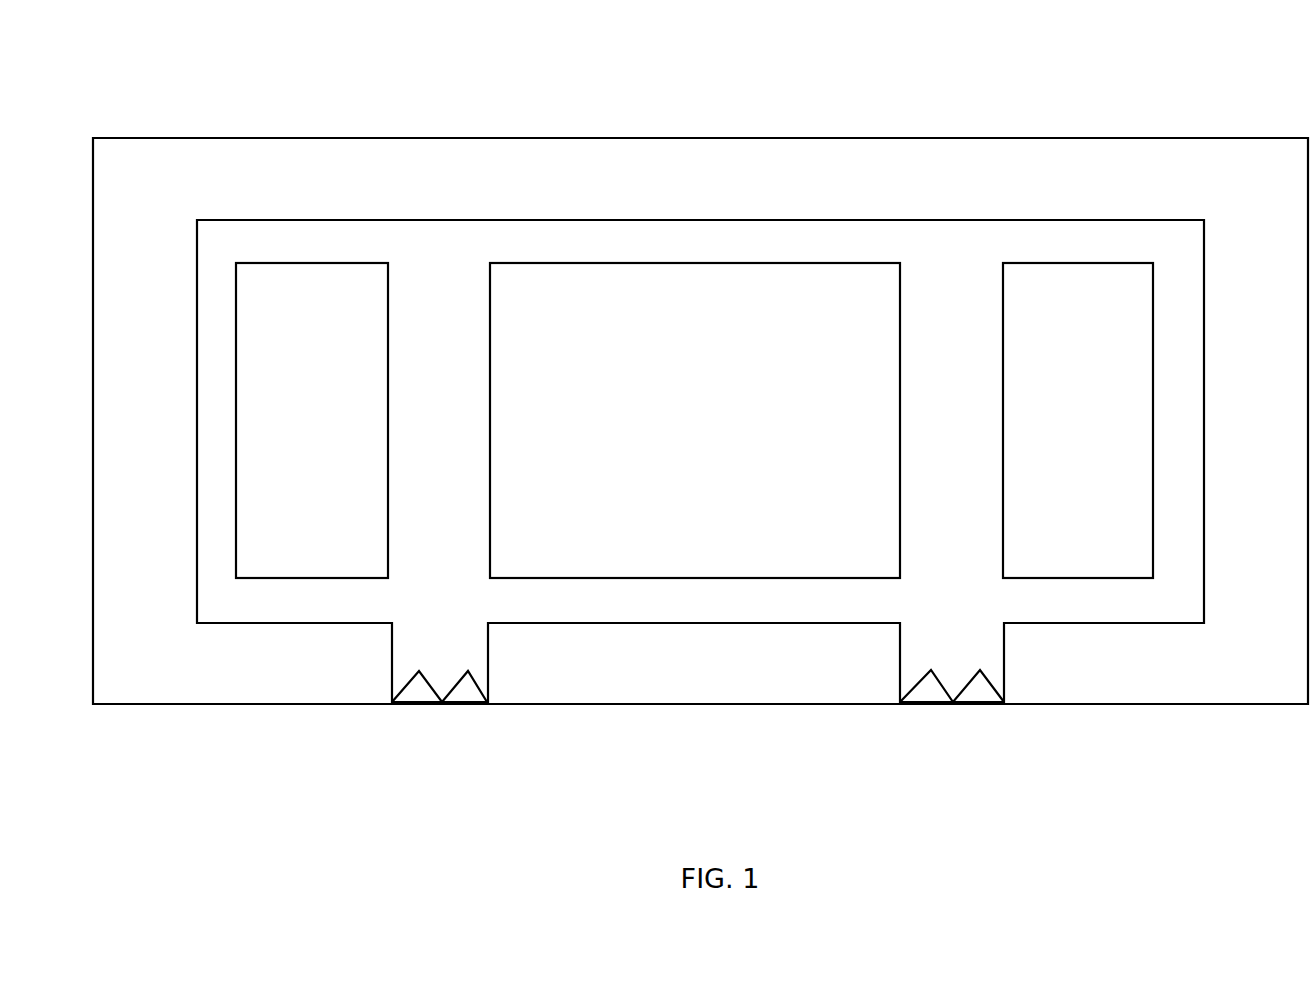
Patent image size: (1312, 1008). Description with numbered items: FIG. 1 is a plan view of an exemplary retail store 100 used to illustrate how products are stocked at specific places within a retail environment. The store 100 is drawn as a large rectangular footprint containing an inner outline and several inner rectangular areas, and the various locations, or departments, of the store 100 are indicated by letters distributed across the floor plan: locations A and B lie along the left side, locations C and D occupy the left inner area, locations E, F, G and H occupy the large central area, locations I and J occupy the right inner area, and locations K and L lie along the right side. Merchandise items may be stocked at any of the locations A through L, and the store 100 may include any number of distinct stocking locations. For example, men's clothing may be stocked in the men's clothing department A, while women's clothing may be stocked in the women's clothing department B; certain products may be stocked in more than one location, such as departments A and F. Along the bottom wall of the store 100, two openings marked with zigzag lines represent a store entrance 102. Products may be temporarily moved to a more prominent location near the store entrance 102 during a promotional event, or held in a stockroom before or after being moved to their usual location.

The retail store 100 is at (702, 402).
The store entrance 102 is at (442, 705).
The men's clothing department A is at (135, 320).
The women's clothing department B is at (135, 530).
The location C is at (318, 320).
The location D is at (318, 530).
The location E is at (559, 320).
The location F is at (560, 530).
The location G is at (820, 320).
The location H is at (820, 530).
The location I is at (1074, 320).
The location J is at (1073, 530).
The location K is at (1270, 320).
The location L is at (1270, 530).